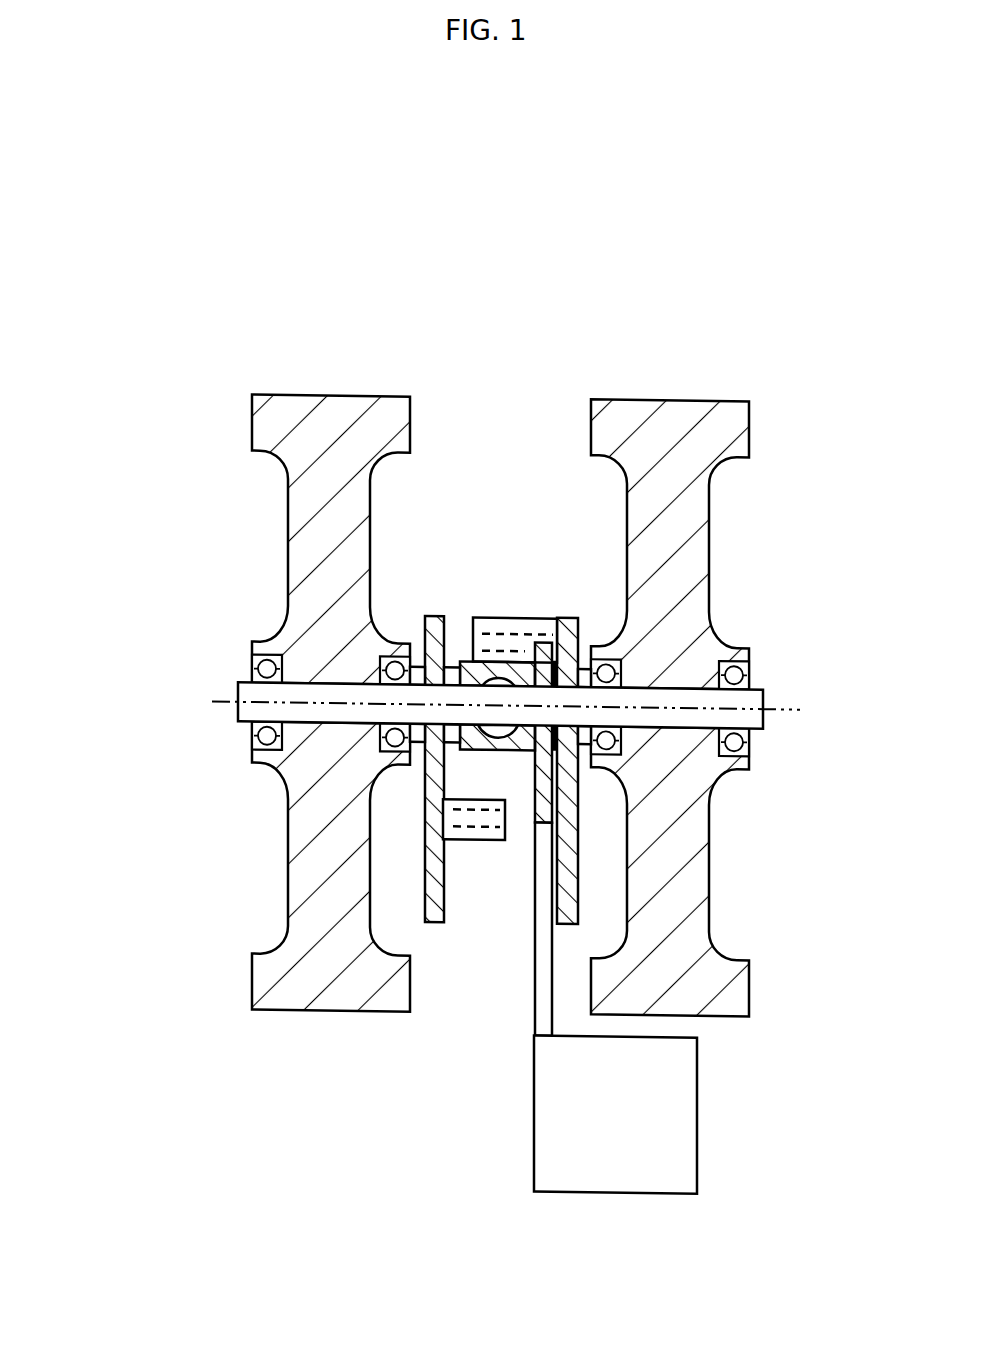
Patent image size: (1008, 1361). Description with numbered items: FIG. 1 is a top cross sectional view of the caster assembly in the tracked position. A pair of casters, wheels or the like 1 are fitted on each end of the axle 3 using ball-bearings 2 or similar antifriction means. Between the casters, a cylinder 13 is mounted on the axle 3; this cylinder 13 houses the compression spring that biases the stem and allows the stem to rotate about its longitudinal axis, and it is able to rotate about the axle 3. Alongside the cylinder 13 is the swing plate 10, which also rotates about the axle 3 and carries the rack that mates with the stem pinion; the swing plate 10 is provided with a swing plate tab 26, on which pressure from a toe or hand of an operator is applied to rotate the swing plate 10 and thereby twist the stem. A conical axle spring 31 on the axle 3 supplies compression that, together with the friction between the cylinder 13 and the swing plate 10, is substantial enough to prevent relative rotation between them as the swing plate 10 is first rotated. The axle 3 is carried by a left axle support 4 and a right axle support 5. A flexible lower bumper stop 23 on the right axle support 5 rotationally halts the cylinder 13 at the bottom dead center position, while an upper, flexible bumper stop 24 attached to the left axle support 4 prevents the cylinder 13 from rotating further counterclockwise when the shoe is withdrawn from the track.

The caster 1 is at (285, 399).
The ball-bearing 2 is at (252, 665).
The axle 3 is at (240, 724).
The left axle support 4 is at (440, 617).
The right axle support 5 is at (563, 617).
The swing plate 10 is at (535, 927).
The cylinder 13 is at (520, 751).
The lower bumper stop 23 is at (540, 617).
The upper bumper stop 24 is at (472, 841).
The swing plate tab 26 is at (697, 1114).
The conical axle spring 31 is at (557, 742).